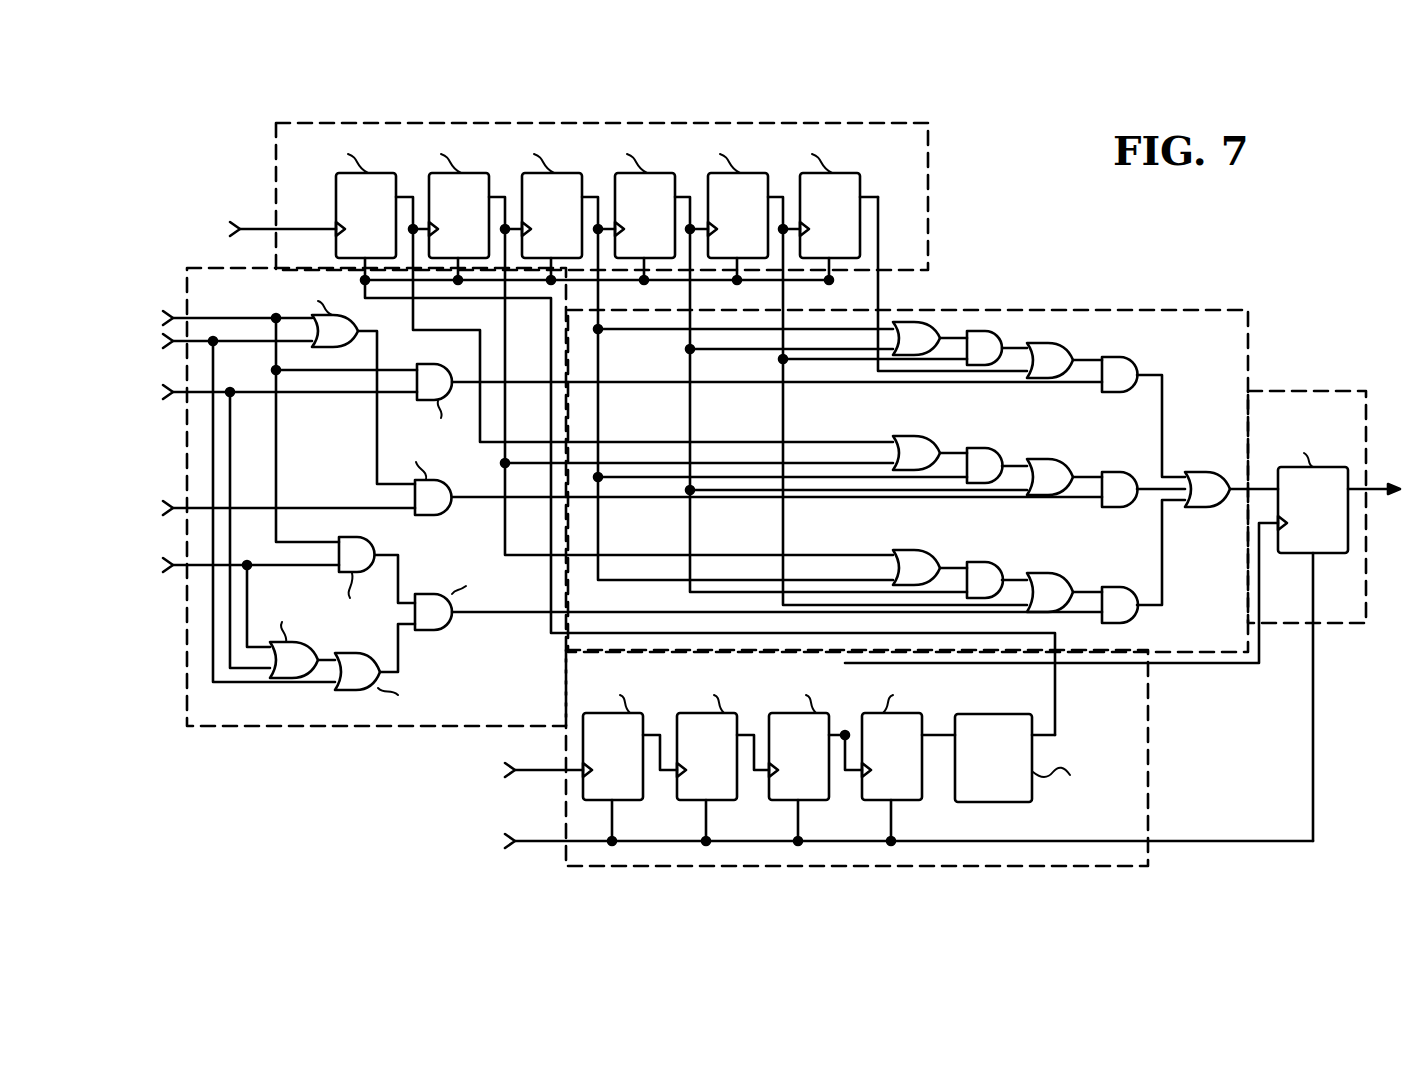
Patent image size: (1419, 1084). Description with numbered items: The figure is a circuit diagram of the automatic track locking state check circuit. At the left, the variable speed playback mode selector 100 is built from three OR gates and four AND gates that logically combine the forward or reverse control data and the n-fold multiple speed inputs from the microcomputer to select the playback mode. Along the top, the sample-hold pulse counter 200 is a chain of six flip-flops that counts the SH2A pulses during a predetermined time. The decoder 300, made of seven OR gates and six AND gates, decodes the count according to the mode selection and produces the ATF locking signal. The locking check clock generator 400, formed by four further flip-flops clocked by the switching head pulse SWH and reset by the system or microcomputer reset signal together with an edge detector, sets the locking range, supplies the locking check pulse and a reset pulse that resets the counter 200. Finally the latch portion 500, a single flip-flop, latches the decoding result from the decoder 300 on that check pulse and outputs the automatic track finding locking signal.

The variable speed playback mode selector 100 is at (198, 292).
The counter 200 is at (915, 197).
The decoder 300 is at (1166, 328).
The locking check clock generator 400 is at (1130, 722).
The latch portion 500 is at (1348, 392).